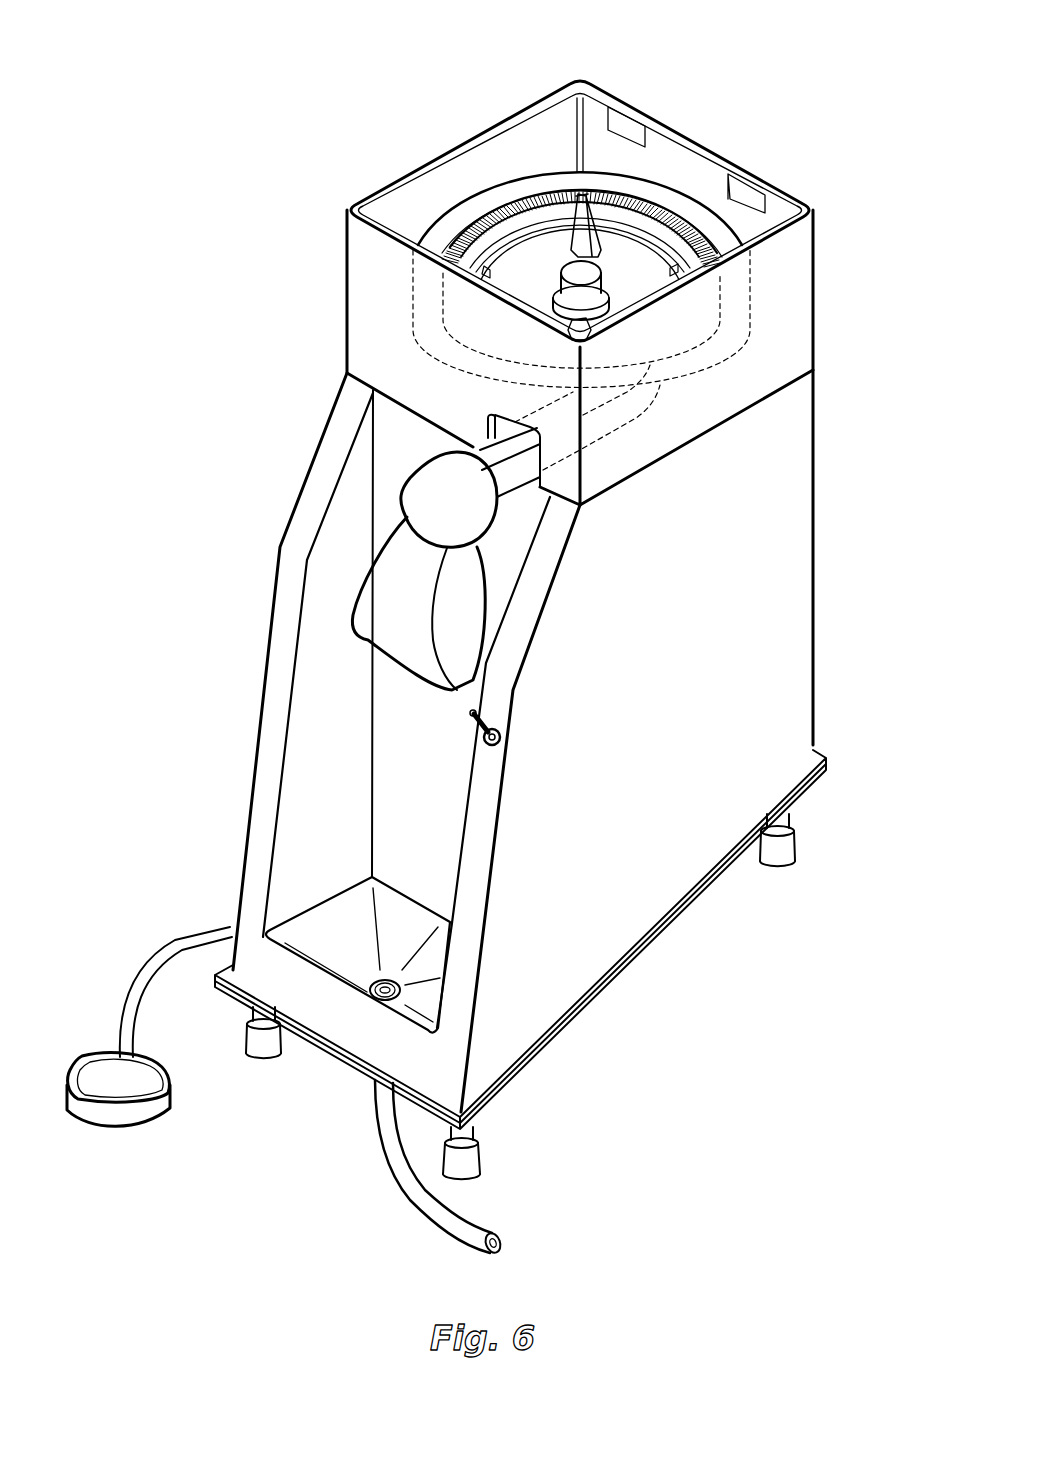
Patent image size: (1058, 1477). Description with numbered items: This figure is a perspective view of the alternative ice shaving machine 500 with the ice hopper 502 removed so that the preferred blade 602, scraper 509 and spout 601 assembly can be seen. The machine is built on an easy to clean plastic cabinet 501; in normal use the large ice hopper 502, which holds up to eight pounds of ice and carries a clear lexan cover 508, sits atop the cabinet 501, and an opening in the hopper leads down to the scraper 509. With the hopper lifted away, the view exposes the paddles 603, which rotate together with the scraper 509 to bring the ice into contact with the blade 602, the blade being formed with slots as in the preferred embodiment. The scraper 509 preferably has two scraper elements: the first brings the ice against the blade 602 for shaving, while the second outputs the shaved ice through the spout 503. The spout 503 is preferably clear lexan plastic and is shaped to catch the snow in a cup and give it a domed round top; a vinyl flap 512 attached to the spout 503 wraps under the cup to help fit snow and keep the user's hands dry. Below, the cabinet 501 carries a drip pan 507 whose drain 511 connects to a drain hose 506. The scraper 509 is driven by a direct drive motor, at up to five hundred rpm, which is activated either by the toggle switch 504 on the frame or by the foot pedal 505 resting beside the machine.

The ice shaving machine 500 is at (818, 560).
The cabinet 501 is at (782, 417).
The ice hopper 502 is at (700, 177).
The spout 503 is at (423, 490).
The toggle switch 504 is at (507, 740).
The foot pedal 505 is at (125, 1085).
The drain hose 506 is at (410, 1210).
The drip pan 507 is at (340, 913).
The cover 508 is at (463, 180).
The scraper 509 is at (620, 287).
The drain 511 is at (420, 990).
The vinyl flap 512 is at (373, 608).
The spout 601 is at (723, 223).
The blade 602 is at (643, 203).
The paddles 603 is at (610, 197).